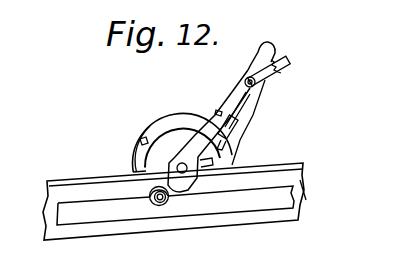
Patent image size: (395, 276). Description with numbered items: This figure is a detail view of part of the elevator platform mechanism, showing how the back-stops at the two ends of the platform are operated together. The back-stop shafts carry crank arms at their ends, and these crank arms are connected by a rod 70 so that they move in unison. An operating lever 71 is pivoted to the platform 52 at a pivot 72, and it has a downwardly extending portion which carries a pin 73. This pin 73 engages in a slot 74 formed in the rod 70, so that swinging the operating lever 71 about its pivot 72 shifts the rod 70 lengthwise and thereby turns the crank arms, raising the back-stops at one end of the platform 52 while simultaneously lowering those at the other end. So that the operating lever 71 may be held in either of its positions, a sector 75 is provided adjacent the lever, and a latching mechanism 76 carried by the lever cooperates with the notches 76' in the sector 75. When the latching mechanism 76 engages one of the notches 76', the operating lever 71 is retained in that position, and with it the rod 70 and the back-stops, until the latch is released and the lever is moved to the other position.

The rod 70 is at (260, 208).
The platform 52 is at (302, 173).
The operating lever 71 is at (270, 48).
The pivot 72 is at (186, 172).
The pin 73 is at (157, 204).
The slot 74 is at (164, 204).
The sector 75 is at (146, 151).
The latching mechanism 76 is at (256, 110).
The notches 76' is at (198, 124).